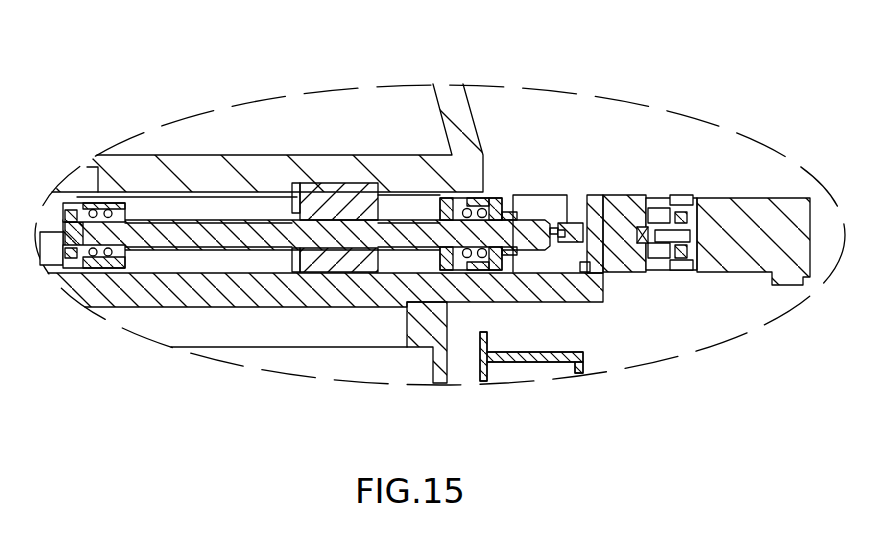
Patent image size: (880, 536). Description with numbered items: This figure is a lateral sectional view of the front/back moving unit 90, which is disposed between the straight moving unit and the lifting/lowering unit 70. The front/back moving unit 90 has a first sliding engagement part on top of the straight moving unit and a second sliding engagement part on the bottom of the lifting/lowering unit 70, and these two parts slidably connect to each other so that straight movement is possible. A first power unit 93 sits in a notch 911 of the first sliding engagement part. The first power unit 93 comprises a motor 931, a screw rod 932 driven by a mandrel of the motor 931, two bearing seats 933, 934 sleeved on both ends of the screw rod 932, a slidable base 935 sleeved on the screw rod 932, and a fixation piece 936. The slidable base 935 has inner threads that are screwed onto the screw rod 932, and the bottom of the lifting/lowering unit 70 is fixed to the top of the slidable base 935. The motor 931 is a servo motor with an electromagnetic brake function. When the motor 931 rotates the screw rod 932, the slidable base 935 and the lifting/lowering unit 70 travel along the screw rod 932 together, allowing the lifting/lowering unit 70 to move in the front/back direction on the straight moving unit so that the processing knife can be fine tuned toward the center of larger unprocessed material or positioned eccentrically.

The lifting/lowering unit 70 is at (258, 159).
The front/back moving unit 90 is at (333, 309).
The first power unit 93 is at (580, 181).
The notch 911 is at (169, 285).
The motor 931 is at (734, 198).
The screw rod 932 is at (212, 232).
The bearing seat 933 is at (91, 205).
The bearing seat 934 is at (491, 206).
The slidable base 935 is at (340, 200).
The fixation piece 936 is at (512, 256).